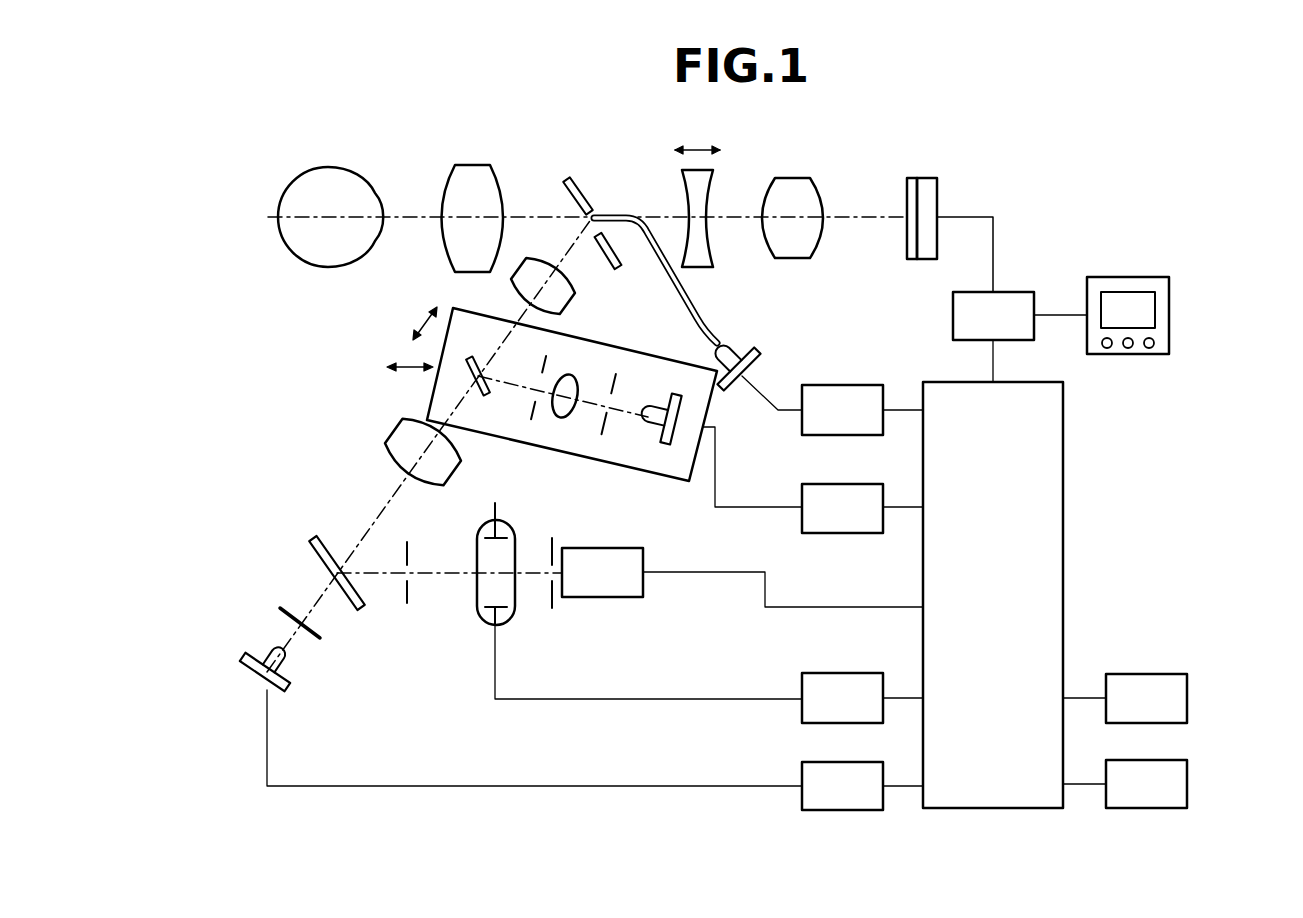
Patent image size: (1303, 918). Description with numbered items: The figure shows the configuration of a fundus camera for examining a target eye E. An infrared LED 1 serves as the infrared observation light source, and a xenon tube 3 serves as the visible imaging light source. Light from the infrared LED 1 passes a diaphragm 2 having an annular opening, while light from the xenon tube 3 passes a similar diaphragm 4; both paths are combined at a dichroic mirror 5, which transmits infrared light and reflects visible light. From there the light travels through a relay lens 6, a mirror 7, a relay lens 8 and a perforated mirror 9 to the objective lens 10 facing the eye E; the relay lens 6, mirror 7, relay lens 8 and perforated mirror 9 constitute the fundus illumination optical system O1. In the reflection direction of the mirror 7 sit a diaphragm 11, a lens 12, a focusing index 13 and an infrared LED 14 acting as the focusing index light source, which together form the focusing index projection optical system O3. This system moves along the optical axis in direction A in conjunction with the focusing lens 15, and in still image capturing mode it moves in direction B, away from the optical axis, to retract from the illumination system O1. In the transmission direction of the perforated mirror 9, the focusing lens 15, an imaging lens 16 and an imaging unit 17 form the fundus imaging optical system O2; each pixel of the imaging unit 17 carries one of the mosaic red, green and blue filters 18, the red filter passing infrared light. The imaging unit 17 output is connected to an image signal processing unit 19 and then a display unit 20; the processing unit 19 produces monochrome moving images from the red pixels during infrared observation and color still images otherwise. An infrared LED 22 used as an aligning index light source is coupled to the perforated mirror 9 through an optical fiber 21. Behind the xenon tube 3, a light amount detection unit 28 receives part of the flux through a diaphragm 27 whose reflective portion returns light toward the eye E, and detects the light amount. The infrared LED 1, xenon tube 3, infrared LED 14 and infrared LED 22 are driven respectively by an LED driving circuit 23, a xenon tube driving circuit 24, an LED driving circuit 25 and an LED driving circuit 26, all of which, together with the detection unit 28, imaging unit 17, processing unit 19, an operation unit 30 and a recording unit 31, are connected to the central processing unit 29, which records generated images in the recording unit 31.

The infrared light emitting diode 1 is at (290, 690).
The diaphragm 2 is at (285, 608).
The xenon tube 3 is at (477, 590).
The diaphragm 4 is at (410, 545).
The dichroic mirror 5 is at (312, 540).
The relay lens 6 is at (393, 432).
The mirror 7 is at (478, 360).
The relay lens 8 is at (575, 305).
The perforated mirror 9 is at (572, 182).
The objective lens 10 is at (471, 165).
The diaphragm 11 is at (547, 368).
The lens 12 is at (553, 413).
The focusing index 13 is at (600, 425).
The infrared LED 14 is at (652, 398).
The focusing lens 15 is at (713, 172).
The imaging lens 16 is at (795, 178).
The imaging unit 17 is at (937, 200).
The filters 18 is at (912, 178).
The image signal processing unit 19 is at (1010, 292).
The display unit 20 is at (1169, 312).
The optical fiber 21 is at (700, 318).
The infrared LED 22 is at (748, 350).
The LED driving circuit 23 is at (830, 762).
The xenon tube driving circuit 24 is at (845, 673).
The LED driving circuit 25 is at (830, 484).
The LED driving circuit 26 is at (845, 385).
The diaphragm 27 is at (553, 608).
The light amount detection unit 28 is at (613, 597).
The central processing unit 29 is at (1063, 594).
The operation unit 30 is at (1187, 784).
The recording unit 31 is at (1187, 698).
The target eye E is at (330, 168).
The fundus illumination optical system O1 is at (385, 500).
The fundus imaging optical system O2 is at (869, 217).
The focusing index projection optical system O3 is at (655, 470).
The optical axis direction A is at (418, 320).
The retracting direction B is at (410, 382).